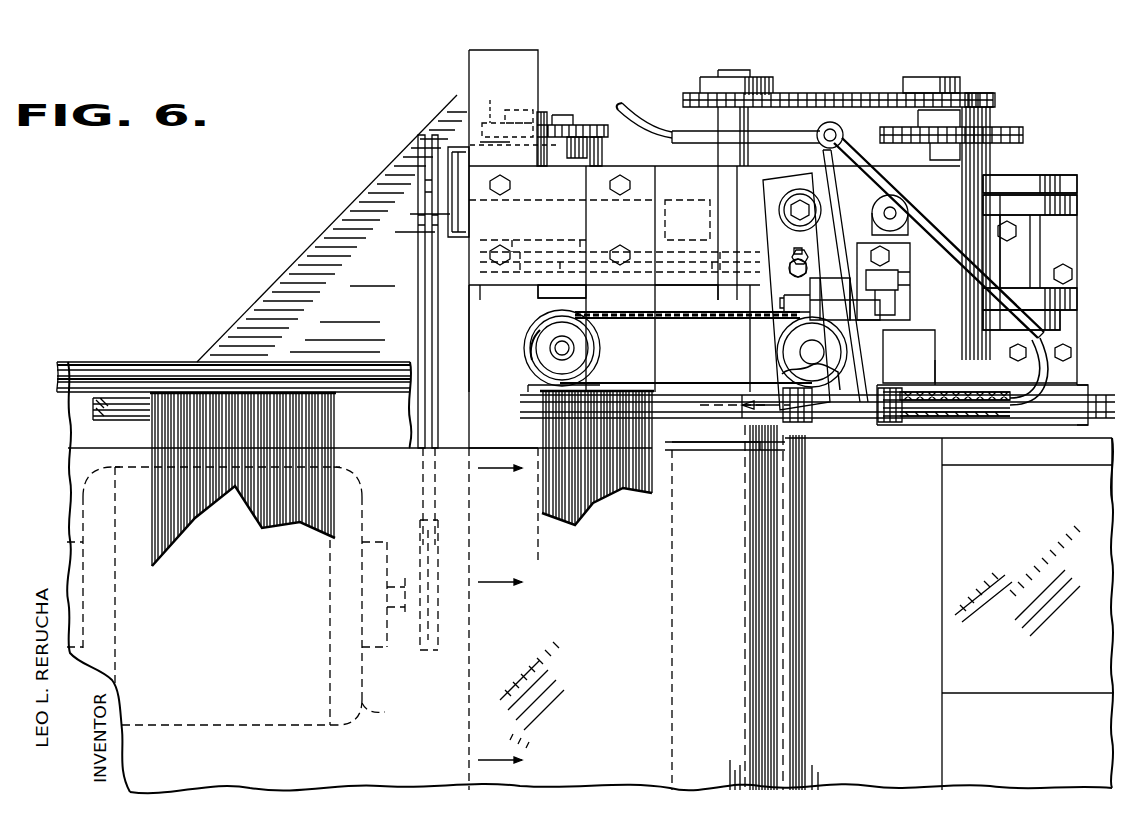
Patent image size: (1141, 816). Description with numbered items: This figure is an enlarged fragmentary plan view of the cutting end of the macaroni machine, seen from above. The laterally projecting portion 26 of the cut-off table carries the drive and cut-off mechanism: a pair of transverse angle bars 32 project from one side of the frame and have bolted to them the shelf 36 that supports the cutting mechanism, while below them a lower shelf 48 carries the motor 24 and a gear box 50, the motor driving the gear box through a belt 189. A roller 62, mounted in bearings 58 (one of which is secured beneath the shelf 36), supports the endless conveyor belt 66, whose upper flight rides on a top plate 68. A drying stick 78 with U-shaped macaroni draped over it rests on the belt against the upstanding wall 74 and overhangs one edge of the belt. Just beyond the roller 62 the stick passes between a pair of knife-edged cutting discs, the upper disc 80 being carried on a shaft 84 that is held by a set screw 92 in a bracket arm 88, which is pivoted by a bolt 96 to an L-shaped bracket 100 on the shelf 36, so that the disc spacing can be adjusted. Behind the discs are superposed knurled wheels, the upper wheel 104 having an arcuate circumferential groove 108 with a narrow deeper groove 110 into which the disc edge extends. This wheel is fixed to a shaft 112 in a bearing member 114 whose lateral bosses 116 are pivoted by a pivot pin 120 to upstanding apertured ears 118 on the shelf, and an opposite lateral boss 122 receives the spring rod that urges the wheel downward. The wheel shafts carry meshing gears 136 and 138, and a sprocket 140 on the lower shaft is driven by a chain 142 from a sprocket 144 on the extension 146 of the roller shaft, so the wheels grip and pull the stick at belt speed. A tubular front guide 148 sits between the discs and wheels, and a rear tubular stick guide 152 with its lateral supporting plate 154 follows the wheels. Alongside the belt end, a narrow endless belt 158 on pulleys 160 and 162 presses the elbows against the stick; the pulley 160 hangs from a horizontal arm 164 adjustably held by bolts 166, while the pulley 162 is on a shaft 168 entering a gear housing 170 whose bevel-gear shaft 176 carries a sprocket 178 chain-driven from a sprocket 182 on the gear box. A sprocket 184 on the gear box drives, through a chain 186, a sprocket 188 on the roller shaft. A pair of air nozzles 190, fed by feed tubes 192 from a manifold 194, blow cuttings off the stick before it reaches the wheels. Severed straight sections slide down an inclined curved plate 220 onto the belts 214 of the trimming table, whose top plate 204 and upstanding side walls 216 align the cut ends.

The motor 24 is at (385, 712).
The laterally projecting portion 26 is at (640, 62).
The transverse angle bars 32 is at (539, 68).
The shelf 36 is at (625, 166).
The shelf 48 is at (242, 318).
The gear box 50 is at (452, 147).
The bearings 58 is at (710, 194).
The roller 62 is at (686, 442).
The endless conveyor belt 66 is at (498, 448).
The top plate 68 is at (372, 437).
The upstanding wall 74 is at (96, 362).
The drying stick 78 is at (140, 392).
The cutting disc 80 is at (840, 425).
The shaft 84 is at (816, 266).
The bracket arm 88 is at (866, 320).
The set screw 92 is at (806, 312).
The bolt 96 is at (876, 284).
The L-shaped bracket 100 is at (842, 132).
The wheel 104 is at (998, 425).
The circumferential groove 108 is at (1036, 425).
The circumferential groove 110 is at (980, 425).
The shaft 112 is at (960, 80).
The bearing member 114 is at (992, 175).
The lateral bosses 116 is at (1060, 175).
The upstanding apertured ears 118 is at (1055, 215).
The pivot pin 120 is at (1024, 268).
The lateral boss 122 is at (896, 176).
The gear 136 is at (1024, 134).
The gear 138 is at (875, 95).
The sprocket 140 is at (985, 93).
The chain 142 is at (806, 92).
The sprocket 144 is at (694, 84).
The shaft extension 146 is at (720, 118).
The tubular front guide 148 is at (872, 425).
The rear tubular stick guide 152 is at (1084, 425).
The lateral supporting plate 154 is at (1070, 376).
The narrow endless belt 158 is at (650, 320).
The pulley 160 is at (776, 358).
The pulley 162 is at (596, 362).
The horizontal arm 164 is at (768, 180).
The bolts 166 is at (790, 210).
The shaft 168 is at (556, 348).
The gear housing 170 is at (587, 294).
The shaft 176 is at (576, 116).
The sprocket 178 is at (588, 122).
The sprocket 182 is at (490, 108).
The sprocket 184 is at (482, 285).
The chain 186 is at (640, 248).
The sprocket 188 is at (702, 284).
The belt 189 is at (418, 320).
The air nozzles 190 is at (858, 425).
The feed tubes 192 is at (910, 218).
The manifold 194 is at (808, 128).
The top plate 204 is at (1048, 466).
The belts 214 is at (998, 694).
The upstanding side walls 216 is at (1106, 440).
The inclined curved plate 220 is at (940, 500).